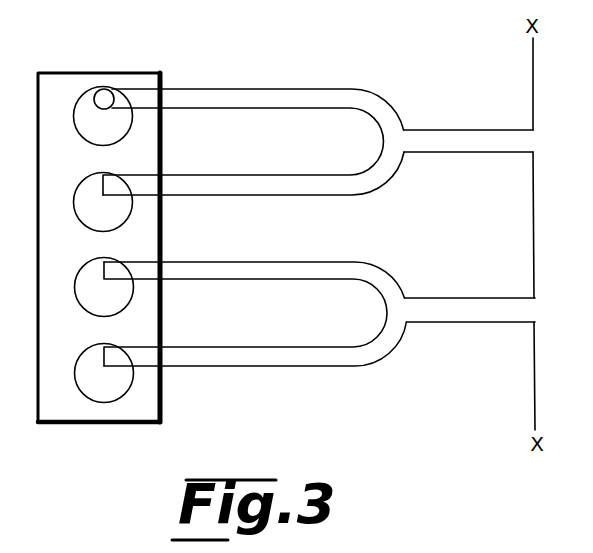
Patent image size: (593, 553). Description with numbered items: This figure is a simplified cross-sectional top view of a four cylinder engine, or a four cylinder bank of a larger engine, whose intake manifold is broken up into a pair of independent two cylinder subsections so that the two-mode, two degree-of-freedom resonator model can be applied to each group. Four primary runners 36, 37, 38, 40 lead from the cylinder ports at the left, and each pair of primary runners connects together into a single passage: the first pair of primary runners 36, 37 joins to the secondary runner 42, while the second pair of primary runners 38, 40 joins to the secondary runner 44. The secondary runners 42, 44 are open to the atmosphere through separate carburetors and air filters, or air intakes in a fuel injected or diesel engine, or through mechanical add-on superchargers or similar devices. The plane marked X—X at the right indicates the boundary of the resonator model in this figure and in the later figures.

The primary runner 36 is at (277, 89).
The primary runner 37 is at (320, 195).
The primary runner 38 is at (222, 262).
The primary runner 40 is at (262, 367).
The secondary runner 42 is at (458, 130).
The secondary runner 44 is at (456, 298).